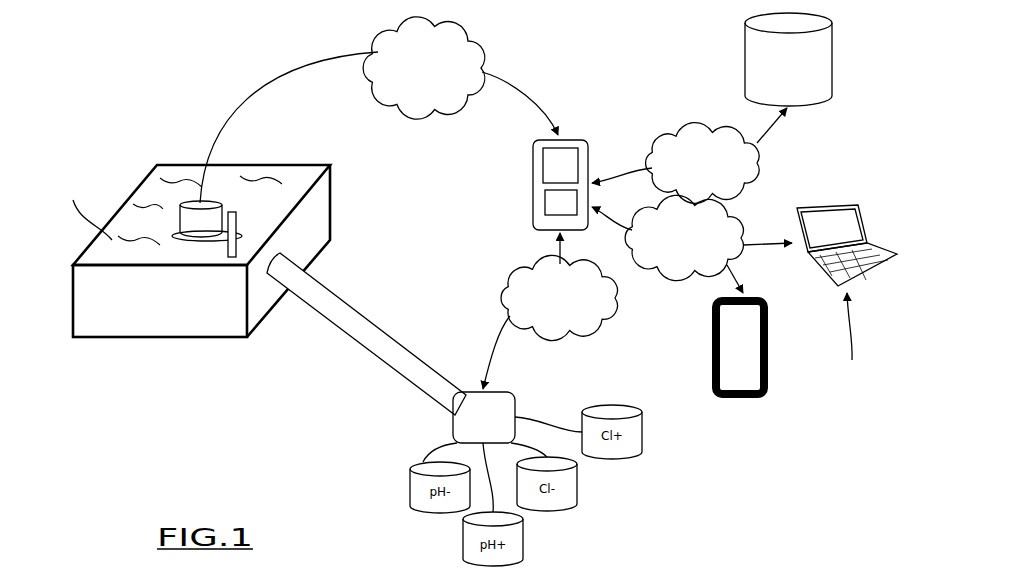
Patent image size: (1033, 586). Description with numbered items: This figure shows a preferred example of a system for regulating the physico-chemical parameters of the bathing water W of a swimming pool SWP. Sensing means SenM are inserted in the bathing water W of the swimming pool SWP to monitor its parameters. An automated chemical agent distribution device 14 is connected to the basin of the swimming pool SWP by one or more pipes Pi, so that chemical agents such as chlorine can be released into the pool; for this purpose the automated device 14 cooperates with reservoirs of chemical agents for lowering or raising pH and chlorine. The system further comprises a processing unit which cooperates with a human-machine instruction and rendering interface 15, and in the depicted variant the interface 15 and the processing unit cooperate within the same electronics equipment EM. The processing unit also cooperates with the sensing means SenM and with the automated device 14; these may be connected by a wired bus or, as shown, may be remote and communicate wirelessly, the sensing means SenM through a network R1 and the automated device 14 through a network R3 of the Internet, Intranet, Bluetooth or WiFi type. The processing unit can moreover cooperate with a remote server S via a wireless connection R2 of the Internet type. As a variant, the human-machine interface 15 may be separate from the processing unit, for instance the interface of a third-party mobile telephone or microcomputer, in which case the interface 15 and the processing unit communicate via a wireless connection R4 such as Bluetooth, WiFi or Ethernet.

The automated chemical agent distribution device 14 is at (502, 452).
The human-machine instruction and rendering interface 15 is at (670, 227).
The swimming pool SWP is at (143, 340).
The bathing water W is at (85, 209).
The pipe Pi is at (370, 358).
The sensing means SenM is at (238, 225).
The electronics equipment EM is at (585, 137).
The remote server S is at (788, 59).
The network R1 is at (460, 76).
The wireless connection R2 is at (689, 155).
The network R3 is at (550, 311).
The wireless connection R4 is at (692, 244).